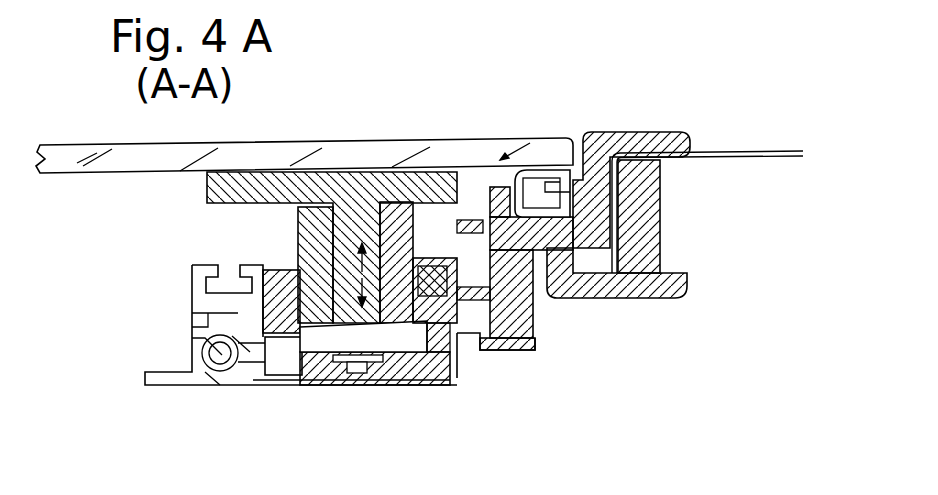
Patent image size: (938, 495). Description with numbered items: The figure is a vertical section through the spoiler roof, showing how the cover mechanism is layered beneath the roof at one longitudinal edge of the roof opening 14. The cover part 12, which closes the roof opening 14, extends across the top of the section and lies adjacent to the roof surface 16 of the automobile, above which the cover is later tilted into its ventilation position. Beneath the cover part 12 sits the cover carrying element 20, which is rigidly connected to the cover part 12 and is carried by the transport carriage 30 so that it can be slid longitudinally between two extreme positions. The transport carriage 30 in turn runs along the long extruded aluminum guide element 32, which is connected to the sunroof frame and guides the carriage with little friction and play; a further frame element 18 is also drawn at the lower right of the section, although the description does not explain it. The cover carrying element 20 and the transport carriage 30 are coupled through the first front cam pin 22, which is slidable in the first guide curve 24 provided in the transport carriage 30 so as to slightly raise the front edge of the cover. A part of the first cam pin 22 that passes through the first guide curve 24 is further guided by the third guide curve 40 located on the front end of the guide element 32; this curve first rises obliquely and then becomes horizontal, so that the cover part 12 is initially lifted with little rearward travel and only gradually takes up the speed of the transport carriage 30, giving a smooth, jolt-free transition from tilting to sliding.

The cover part 12 is at (72, 163).
The roof opening 14 is at (465, 197).
The roof surface 16 is at (723, 148).
The frame member 18 is at (456, 378).
The cover carrying element 20 is at (362, 232).
The first front cam pin 22 is at (332, 340).
The first guide curve 24 is at (402, 342).
The transport carriage 30 is at (387, 368).
The guide element 32 is at (282, 368).
The third guide curve 40 is at (393, 317).